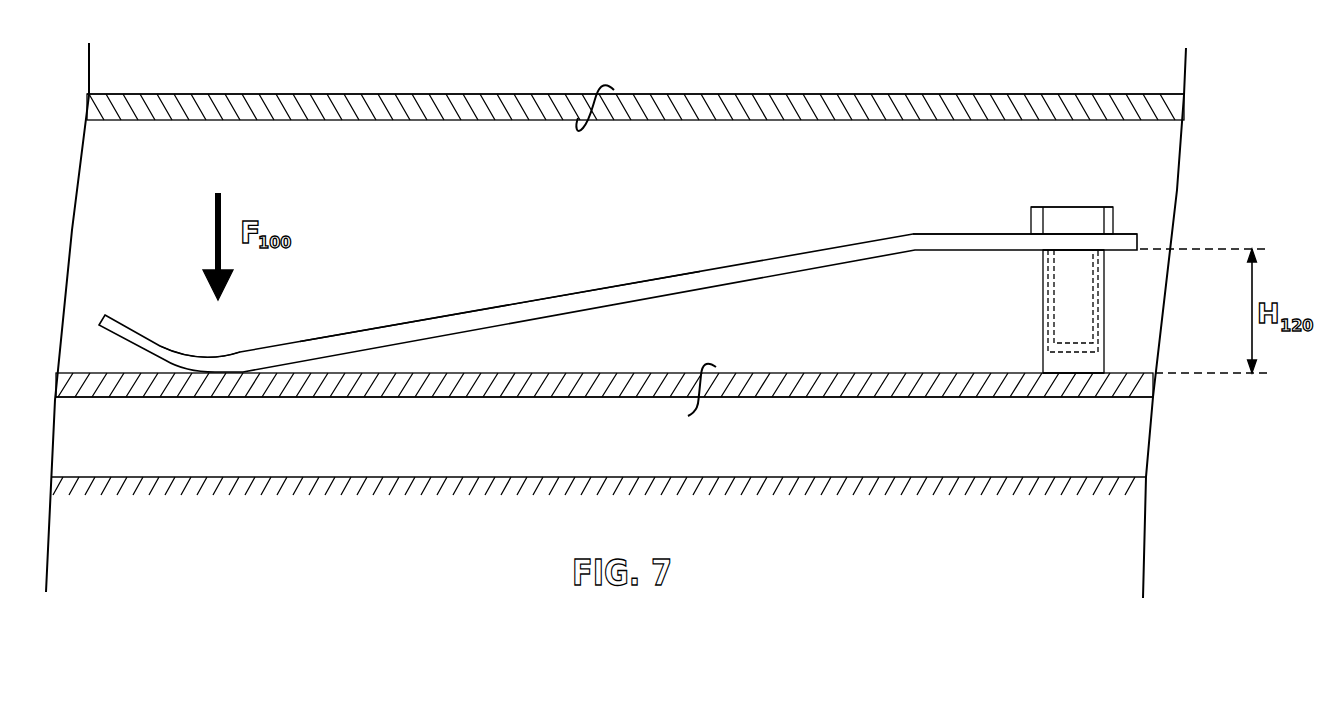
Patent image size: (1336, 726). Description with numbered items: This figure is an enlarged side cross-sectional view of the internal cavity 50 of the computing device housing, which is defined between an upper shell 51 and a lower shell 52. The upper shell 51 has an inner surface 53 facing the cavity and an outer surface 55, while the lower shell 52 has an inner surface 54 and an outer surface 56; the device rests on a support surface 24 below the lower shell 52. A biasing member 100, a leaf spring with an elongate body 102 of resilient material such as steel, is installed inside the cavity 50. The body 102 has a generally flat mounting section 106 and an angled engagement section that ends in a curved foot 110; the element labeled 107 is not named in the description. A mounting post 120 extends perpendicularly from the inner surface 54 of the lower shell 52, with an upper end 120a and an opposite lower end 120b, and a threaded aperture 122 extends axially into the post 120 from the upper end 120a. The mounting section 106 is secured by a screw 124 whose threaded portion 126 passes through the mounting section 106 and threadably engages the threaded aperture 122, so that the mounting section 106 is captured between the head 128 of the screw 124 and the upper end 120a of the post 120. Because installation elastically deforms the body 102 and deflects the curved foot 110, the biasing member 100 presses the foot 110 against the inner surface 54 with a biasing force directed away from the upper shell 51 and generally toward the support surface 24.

The support surface 24 is at (145, 477).
The internal cavity 50 is at (200, 136).
The upper shell 51 is at (389, 82).
The lower shell 52 is at (822, 413).
The inner surface 53 is at (612, 99).
The inner surface 54 is at (684, 401).
The outer surface 55 is at (704, 94).
The outer surface 56 is at (571, 398).
The biasing member 100 is at (618, 263).
The elongate body 102 is at (766, 235).
The mounting section 106 is at (978, 222).
The upper surface of spring 107 is at (512, 291).
The curved foot 110 is at (202, 338).
The mounting post 120 is at (1031, 307).
The upper end 120a is at (1031, 259).
The lower end 120b is at (1032, 362).
The threaded aperture 122 is at (1104, 285).
The screw 124 is at (1129, 222).
The threaded portion 126 is at (1090, 330).
The head 128 is at (1058, 206).